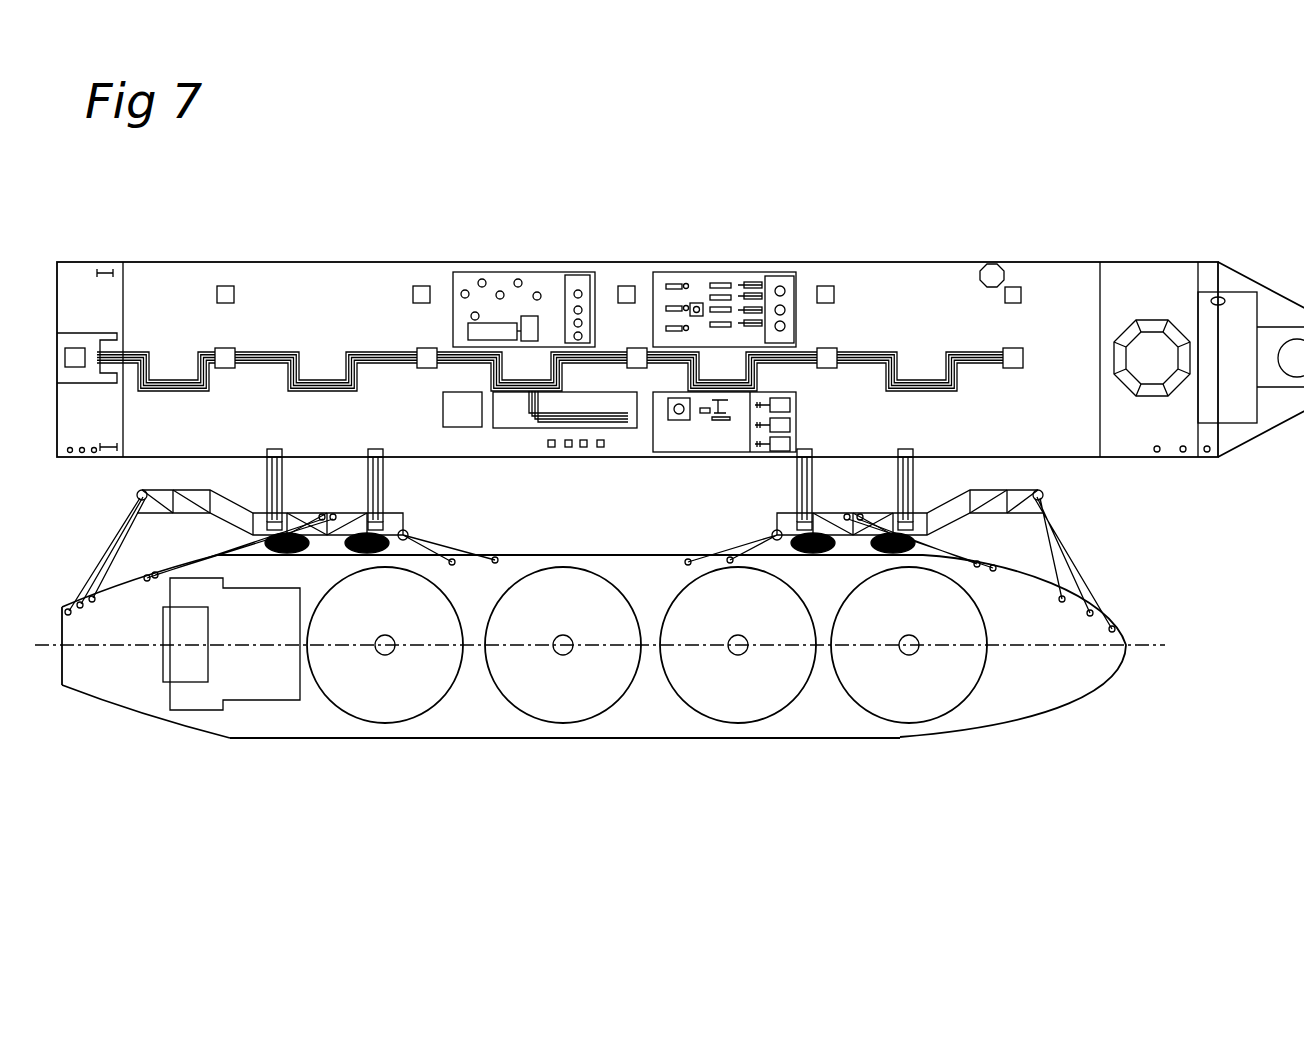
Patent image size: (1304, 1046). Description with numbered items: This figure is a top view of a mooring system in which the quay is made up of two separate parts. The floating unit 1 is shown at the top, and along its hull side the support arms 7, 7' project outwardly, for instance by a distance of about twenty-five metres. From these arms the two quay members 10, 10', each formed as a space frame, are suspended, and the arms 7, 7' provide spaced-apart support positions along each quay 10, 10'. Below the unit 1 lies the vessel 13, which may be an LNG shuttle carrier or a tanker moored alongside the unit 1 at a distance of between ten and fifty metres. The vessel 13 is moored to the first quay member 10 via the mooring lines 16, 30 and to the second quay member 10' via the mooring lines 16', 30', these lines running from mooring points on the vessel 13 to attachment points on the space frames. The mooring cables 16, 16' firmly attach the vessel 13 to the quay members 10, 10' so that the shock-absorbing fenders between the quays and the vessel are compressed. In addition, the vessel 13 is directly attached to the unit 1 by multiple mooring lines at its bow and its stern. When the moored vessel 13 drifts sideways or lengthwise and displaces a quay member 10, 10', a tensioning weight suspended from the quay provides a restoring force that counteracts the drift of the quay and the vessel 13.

The unit 1 is at (1057, 297).
The support arm 7 is at (404, 489).
The support arm 7' is at (933, 489).
The quay member 10 is at (241, 528).
The quay member 10' is at (917, 521).
The vessel 13 is at (312, 722).
The mooring cable 16 is at (99, 556).
The mooring cable 16' is at (1098, 564).
The mooring line 30 is at (459, 518).
The mooring line 30' is at (706, 518).